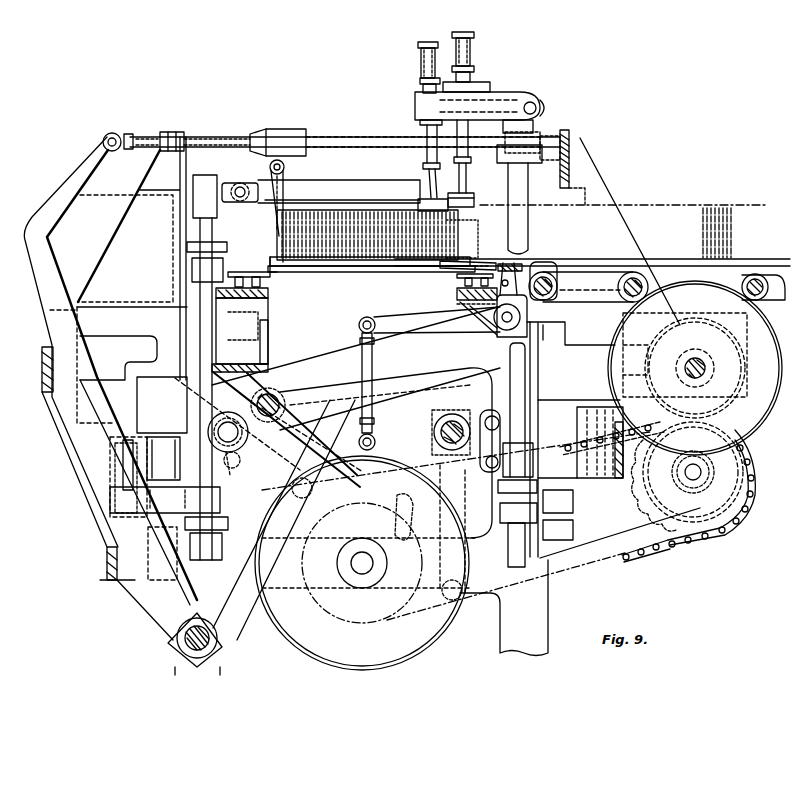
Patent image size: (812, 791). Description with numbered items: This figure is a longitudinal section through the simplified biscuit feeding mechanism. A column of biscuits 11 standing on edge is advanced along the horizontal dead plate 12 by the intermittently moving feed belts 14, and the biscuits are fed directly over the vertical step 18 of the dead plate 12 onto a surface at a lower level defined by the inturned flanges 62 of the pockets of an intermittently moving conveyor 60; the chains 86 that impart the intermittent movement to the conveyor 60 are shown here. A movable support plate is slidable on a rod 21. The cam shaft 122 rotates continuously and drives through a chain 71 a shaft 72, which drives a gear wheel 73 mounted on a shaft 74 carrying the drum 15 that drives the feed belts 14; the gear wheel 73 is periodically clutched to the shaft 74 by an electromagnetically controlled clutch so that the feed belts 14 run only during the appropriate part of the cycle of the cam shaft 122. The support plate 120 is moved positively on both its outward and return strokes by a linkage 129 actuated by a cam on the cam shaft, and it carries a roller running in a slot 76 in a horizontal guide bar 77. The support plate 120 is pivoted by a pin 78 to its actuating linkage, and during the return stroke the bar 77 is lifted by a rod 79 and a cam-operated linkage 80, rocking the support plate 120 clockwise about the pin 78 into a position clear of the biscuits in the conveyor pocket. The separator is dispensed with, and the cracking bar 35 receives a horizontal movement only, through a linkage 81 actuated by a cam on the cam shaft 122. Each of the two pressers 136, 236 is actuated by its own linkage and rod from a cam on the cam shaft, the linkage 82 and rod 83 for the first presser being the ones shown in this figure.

The column of biscuits 11 is at (716, 207).
The dead plate 12 is at (486, 262).
The belts 14 is at (596, 262).
The driving drum 15 is at (706, 291).
The vertical step 18 is at (442, 262).
The rod 21 is at (362, 146).
The cracking bar 35 is at (445, 270).
The conveyor 60 is at (320, 270).
The inturned flanges 62 is at (352, 270).
The chain 71 is at (672, 545).
The shaft 72 is at (684, 476).
The gear wheel 73 is at (745, 368).
The shaft 74 is at (696, 358).
The slot 76 is at (233, 185).
The guide bar 77 is at (335, 181).
The pin 78 is at (284, 170).
The rod 79 is at (212, 323).
The cam-operated linkage 80 is at (448, 456).
The linkage 81 is at (373, 347).
The linkage 82 is at (350, 405).
The rod 83 is at (526, 224).
The chains 86 is at (262, 284).
The support plate 120 is at (277, 240).
The cam shaft 122 is at (358, 564).
The linkage 129 is at (108, 160).
The foot 136 is at (438, 198).
The foot 236 is at (470, 196).